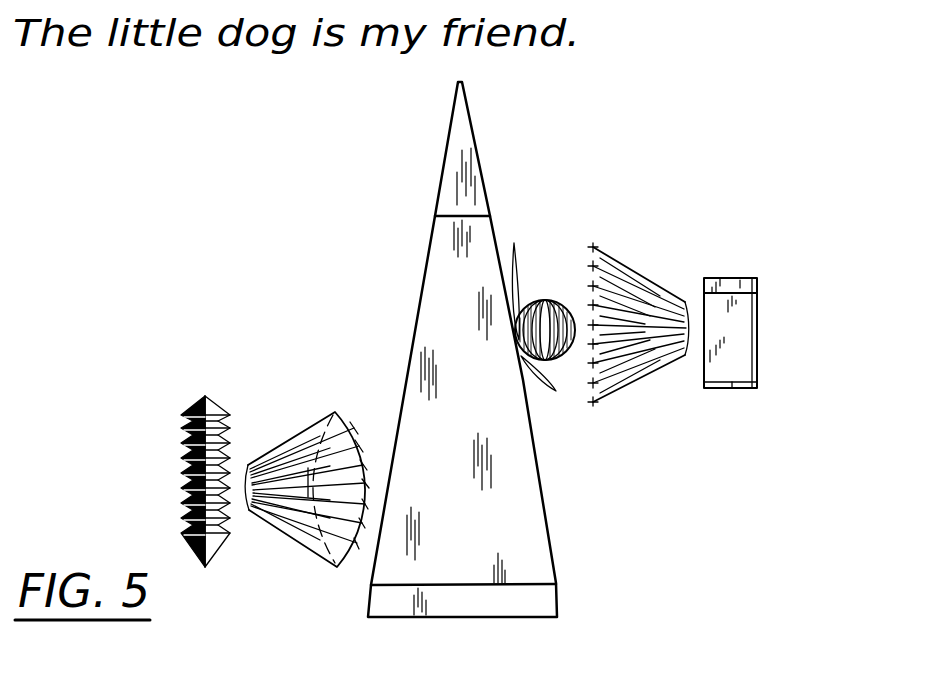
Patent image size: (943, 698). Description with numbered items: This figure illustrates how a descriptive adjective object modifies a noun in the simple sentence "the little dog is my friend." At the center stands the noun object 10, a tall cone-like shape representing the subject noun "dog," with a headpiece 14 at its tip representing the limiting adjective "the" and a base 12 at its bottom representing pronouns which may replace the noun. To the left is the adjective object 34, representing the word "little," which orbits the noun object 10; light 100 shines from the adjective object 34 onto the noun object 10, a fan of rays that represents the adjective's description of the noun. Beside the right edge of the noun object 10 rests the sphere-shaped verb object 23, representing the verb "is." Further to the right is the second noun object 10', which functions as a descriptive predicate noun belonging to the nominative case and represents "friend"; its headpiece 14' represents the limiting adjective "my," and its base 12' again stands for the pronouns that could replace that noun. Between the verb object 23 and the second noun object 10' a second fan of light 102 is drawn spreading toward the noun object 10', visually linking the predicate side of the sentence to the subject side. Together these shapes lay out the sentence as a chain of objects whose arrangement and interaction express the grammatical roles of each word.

The noun object 10 is at (469, 368).
The base 12 is at (500, 619).
The headpiece 14 is at (488, 149).
The sphere-shaped verb object 23 is at (543, 284).
The adjective object 34 is at (173, 384).
The light 100 is at (299, 403).
The fan-shaped element 102 is at (632, 388).
The noun object 10' is at (780, 321).
The base 12' is at (765, 406).
The headpiece 14' is at (734, 252).